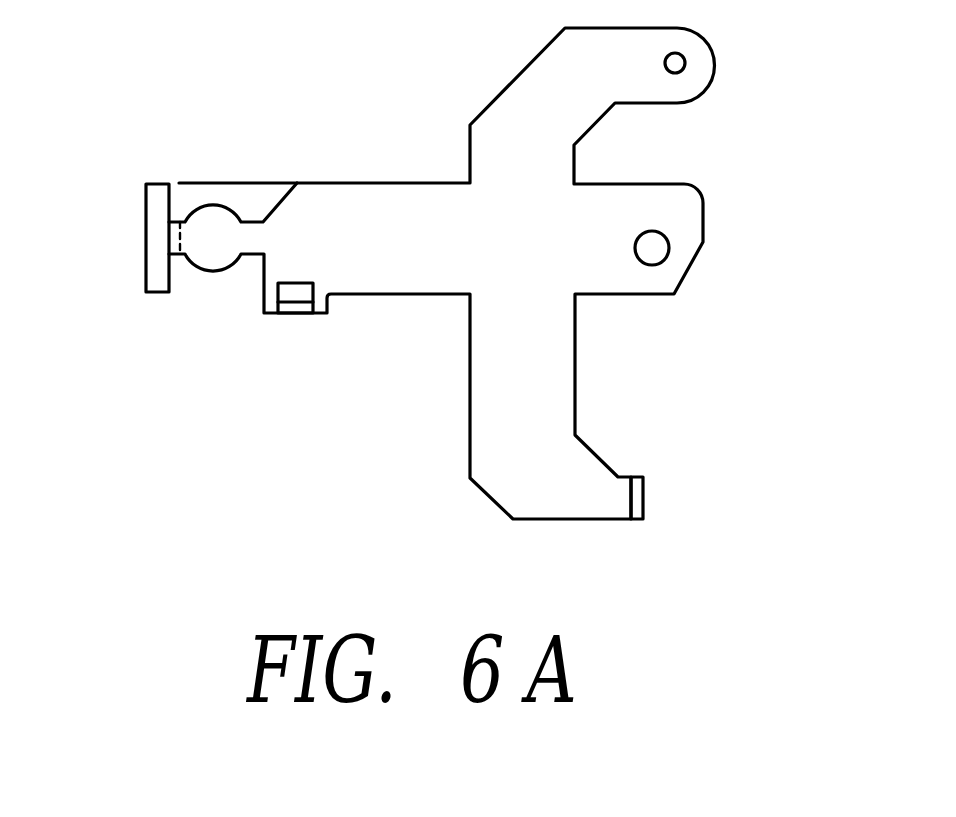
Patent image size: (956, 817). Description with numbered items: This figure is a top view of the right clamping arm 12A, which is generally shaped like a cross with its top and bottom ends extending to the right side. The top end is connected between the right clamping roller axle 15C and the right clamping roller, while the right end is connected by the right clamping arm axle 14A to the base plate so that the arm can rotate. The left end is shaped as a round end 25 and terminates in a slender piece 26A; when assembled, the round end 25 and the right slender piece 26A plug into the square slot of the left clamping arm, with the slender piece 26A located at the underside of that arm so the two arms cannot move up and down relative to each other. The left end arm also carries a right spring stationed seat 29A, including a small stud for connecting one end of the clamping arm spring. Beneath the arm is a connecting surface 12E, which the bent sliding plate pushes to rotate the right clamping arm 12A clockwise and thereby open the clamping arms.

The right clamping arm 12A is at (537, 82).
The connecting surface 12E is at (643, 498).
The right clamping arm axle 14A is at (656, 250).
The right clamping roller axle 15C is at (680, 63).
The round end 25 is at (218, 217).
The right slender piece 26A is at (157, 228).
The right spring stationed seat 29A is at (293, 297).